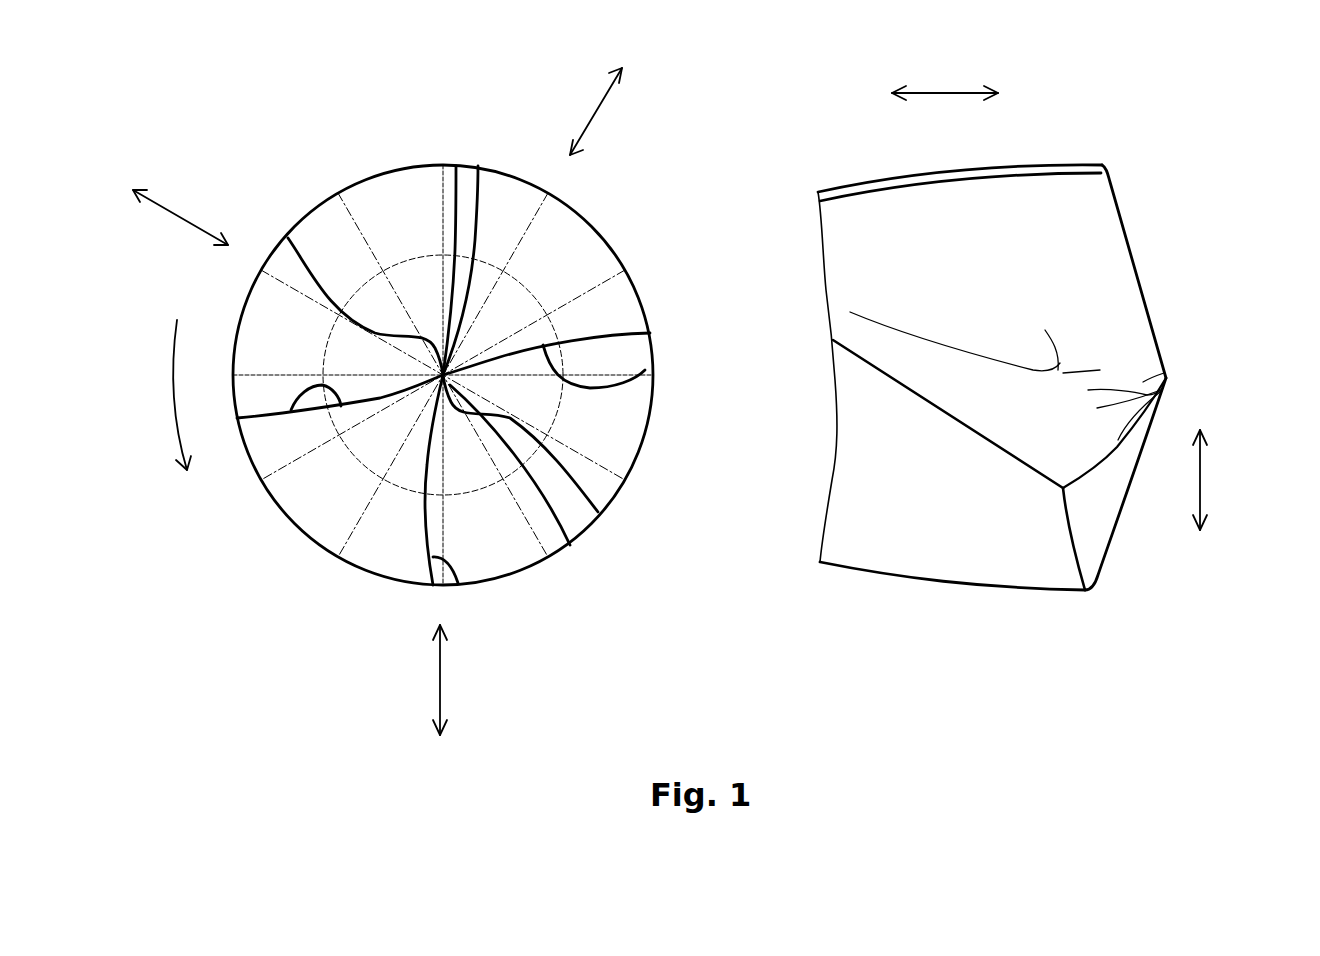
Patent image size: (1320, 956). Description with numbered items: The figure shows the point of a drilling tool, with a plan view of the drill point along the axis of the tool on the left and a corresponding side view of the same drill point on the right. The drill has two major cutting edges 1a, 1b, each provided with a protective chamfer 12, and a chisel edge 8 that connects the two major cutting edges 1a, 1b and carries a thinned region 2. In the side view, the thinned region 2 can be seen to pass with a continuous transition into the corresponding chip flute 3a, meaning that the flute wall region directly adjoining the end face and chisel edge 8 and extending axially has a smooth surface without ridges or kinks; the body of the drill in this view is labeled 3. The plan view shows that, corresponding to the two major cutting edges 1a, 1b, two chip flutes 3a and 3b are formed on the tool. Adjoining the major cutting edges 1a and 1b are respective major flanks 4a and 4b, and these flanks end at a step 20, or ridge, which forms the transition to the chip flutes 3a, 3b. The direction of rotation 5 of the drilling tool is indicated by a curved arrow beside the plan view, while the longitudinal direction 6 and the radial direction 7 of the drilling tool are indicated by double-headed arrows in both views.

The major cutting edge 1a is at (460, 207).
The major cutting edge 1b is at (433, 586).
The thinned region 2 is at (570, 545).
The drill body 3 is at (938, 272).
The chip flute 3a is at (337, 250).
The chip flute 3b is at (577, 517).
The major flank 4a is at (547, 273).
The major flank 4b is at (367, 520).
The direction of rotation 5 is at (174, 390).
The longitudinal direction 6 is at (947, 92).
The radial direction 7 is at (604, 110).
The chisel edge 8 is at (480, 162).
The protective chamfer 12 is at (452, 162).
The step 20 is at (587, 378).